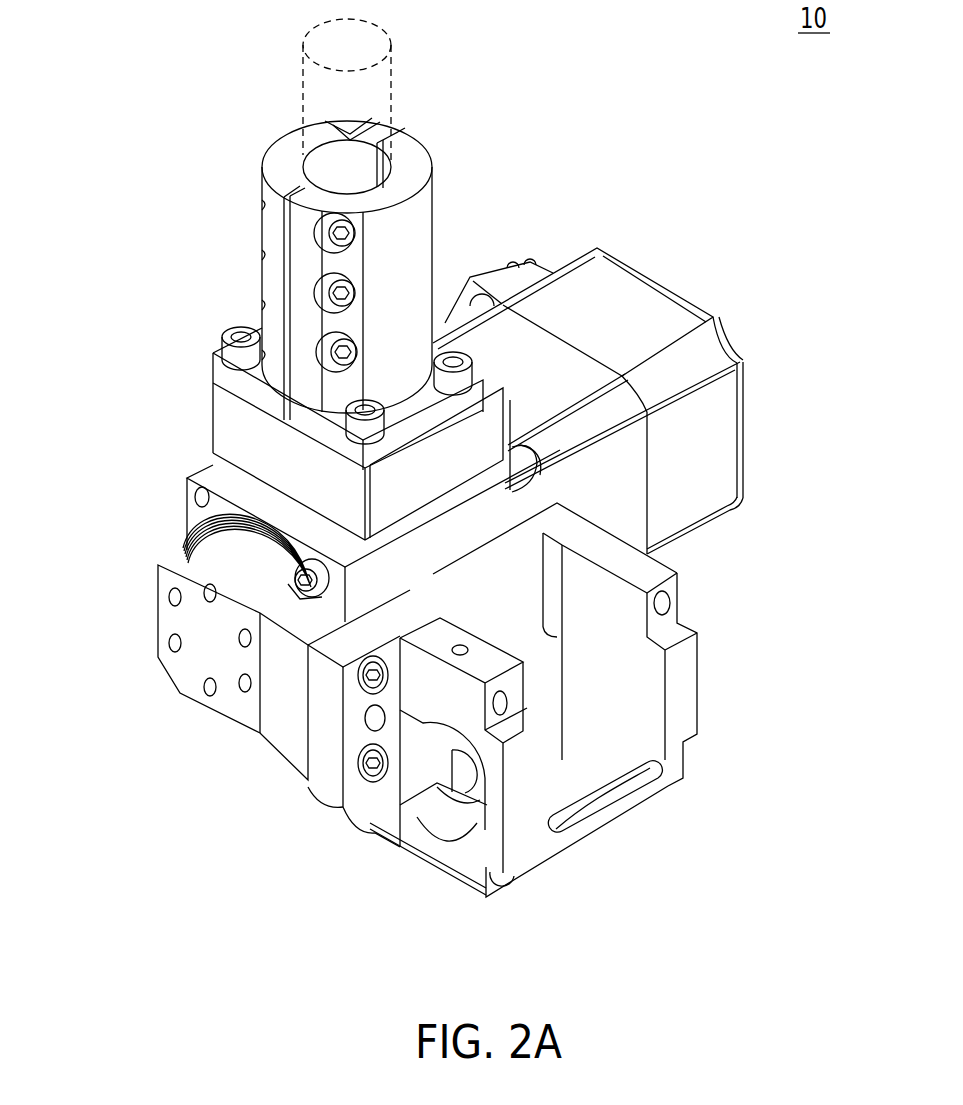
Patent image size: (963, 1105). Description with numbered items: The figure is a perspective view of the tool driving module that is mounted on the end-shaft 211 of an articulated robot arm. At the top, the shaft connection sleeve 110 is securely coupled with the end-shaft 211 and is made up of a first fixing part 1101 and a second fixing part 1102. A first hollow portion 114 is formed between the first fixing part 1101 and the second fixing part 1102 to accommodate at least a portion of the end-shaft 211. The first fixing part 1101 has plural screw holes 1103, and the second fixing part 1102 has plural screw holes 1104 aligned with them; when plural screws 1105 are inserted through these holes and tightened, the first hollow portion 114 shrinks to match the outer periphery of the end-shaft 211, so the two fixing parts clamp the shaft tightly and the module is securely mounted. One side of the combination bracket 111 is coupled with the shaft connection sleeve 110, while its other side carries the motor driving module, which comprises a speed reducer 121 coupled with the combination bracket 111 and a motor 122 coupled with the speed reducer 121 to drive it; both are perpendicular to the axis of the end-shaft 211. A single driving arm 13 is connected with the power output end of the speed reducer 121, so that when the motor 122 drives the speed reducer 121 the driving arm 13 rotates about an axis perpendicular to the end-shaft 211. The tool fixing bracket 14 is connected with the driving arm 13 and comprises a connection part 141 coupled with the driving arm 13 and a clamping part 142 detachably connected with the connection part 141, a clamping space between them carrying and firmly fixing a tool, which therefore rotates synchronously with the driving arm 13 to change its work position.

The shaft connection sleeve 110 is at (313, 269).
The first fixing part 1101 is at (275, 280).
The second fixing part 1102 is at (305, 330).
The screw holes 1103 is at (260, 195).
The screw holes 1104 is at (330, 220).
The screws 1105 is at (350, 234).
The combination bracket 111 is at (225, 425).
The first hollow portion 114 is at (327, 172).
The speed reducer 121 is at (410, 553).
The motor 122 is at (717, 460).
The driving arm 13 is at (168, 623).
The tool fixing bracket 14 is at (502, 766).
The connection part 141 is at (365, 812).
The clamping part 142 is at (425, 848).
The end-shaft 211 is at (382, 82).